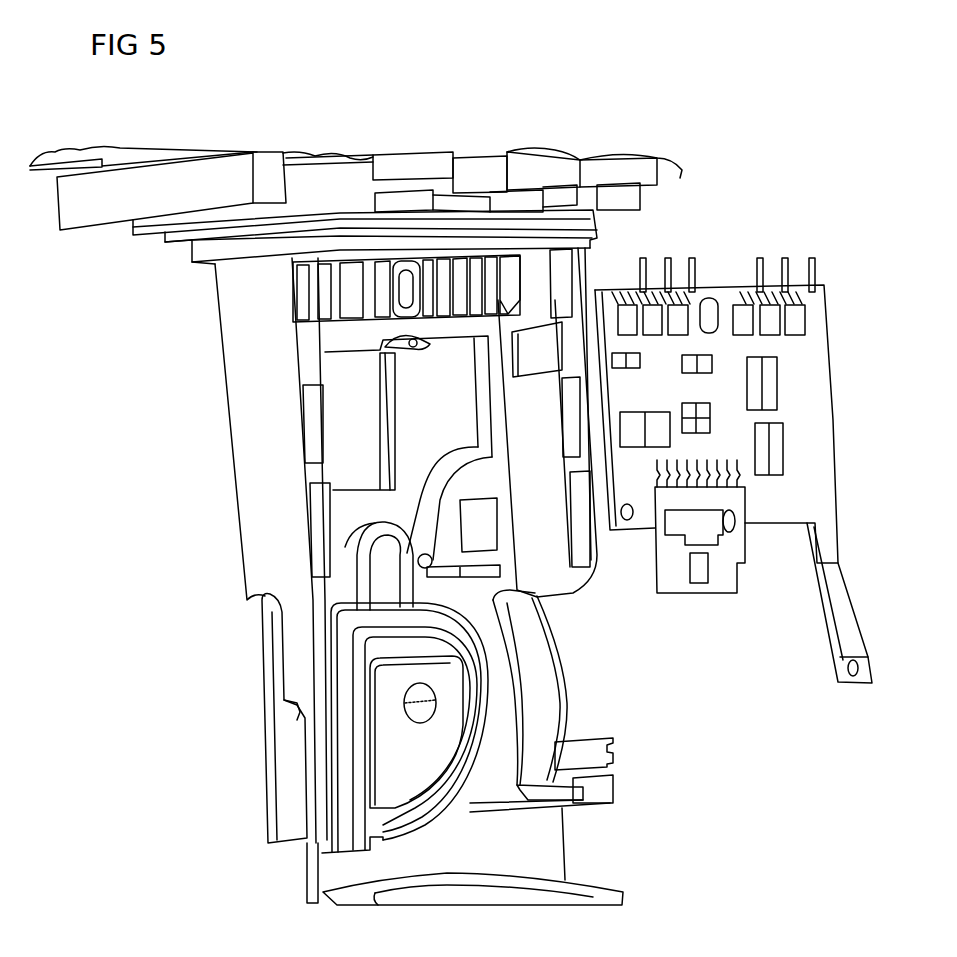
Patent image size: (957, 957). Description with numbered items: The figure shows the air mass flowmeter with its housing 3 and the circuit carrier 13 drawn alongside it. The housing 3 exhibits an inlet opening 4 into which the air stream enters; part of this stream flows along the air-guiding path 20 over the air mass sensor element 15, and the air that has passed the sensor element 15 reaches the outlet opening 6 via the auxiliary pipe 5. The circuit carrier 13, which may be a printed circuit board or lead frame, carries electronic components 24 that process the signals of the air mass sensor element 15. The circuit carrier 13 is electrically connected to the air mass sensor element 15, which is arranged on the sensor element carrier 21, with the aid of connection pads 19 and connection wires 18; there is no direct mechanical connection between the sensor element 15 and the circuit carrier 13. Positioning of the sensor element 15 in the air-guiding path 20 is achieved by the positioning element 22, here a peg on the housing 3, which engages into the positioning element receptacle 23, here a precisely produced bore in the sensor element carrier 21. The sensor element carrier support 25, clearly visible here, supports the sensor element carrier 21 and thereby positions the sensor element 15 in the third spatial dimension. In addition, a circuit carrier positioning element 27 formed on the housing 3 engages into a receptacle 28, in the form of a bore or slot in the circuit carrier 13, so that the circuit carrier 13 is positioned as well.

The housing 3 is at (255, 477).
The inlet opening 4 is at (343, 872).
The auxiliary pipe 5 is at (493, 730).
The outlet opening 6 is at (577, 852).
The circuit carrier 13 is at (800, 418).
The air mass sensor element 15 is at (687, 593).
The connection wires 18 is at (788, 268).
The connection pads 19 is at (727, 463).
The air-guiding path 20 is at (273, 617).
The sensor element carrier 21 is at (665, 577).
The positioning element 22 is at (357, 530).
The positioning element receptacle 23 is at (735, 522).
The electronic components 24 is at (700, 362).
The sensor element carrier support 25 is at (330, 617).
The circuit carrier positioning element 27 is at (395, 340).
The receptacle for the circuit carrier positioning element 28 is at (724, 305).